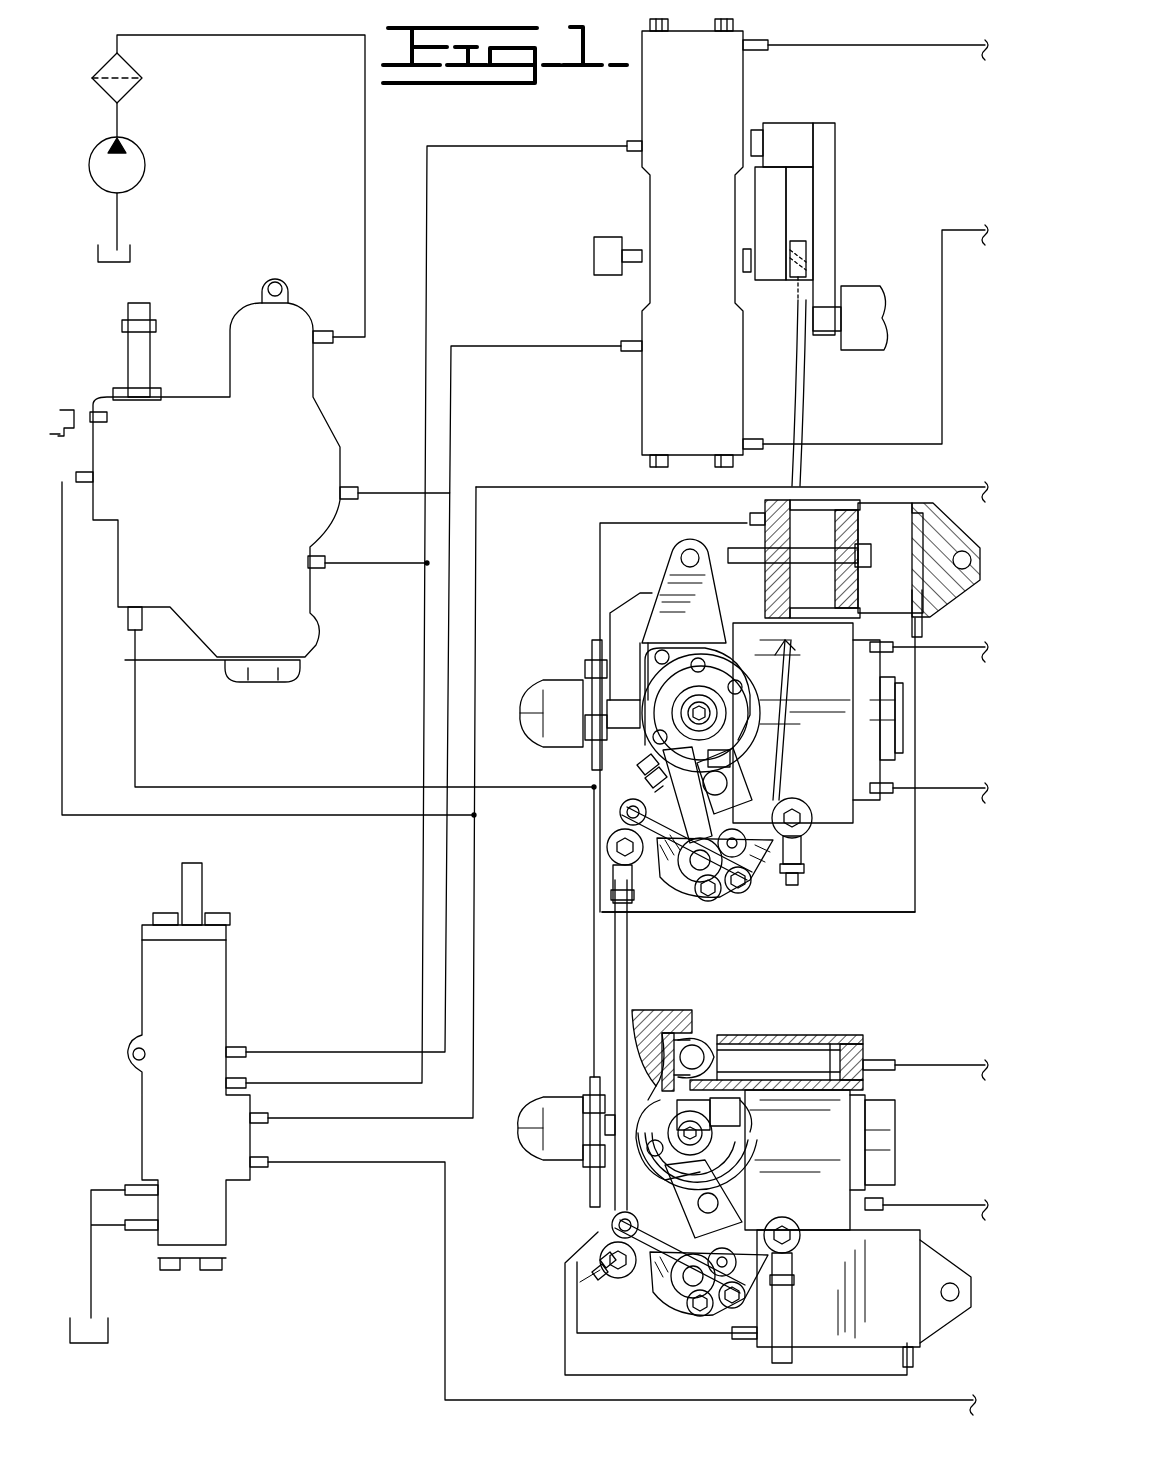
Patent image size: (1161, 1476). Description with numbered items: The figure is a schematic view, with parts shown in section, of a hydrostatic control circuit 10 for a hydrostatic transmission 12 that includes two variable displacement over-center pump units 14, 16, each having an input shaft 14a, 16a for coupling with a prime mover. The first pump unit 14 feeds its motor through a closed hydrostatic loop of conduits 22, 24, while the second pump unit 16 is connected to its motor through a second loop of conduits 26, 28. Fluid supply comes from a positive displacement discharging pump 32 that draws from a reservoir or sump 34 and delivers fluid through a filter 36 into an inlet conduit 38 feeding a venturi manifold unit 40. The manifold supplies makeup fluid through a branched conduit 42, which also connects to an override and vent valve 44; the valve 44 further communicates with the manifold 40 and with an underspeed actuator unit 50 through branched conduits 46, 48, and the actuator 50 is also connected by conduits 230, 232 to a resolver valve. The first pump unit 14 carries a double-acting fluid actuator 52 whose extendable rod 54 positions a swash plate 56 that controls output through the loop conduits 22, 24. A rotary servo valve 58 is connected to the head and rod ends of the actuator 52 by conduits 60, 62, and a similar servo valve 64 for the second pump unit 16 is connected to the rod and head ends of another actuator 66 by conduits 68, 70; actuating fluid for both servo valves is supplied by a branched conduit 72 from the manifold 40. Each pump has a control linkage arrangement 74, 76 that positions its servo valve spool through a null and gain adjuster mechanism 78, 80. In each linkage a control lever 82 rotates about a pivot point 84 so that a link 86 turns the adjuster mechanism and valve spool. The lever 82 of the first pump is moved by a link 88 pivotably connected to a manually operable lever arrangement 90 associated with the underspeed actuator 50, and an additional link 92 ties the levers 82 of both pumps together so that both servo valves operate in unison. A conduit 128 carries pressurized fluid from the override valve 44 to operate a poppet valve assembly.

The hydrostatic control circuit 10 is at (878, 40).
The hydrostatic transmission 12 is at (620, 545).
The first pump unit 14 is at (821, 694).
The input shaft 14a is at (536, 692).
The second pump unit 16 is at (831, 1208).
The input shaft 16a is at (552, 1102).
The conduit 22 is at (968, 790).
The conduit 24 is at (962, 650).
The conduit 26 is at (960, 1066).
The conduit 28 is at (946, 1207).
The positive displacement discharging pump 32 is at (140, 160).
The reservoir or sump 34 is at (138, 252).
The filter 36 is at (128, 62).
The inlet conduit 38 is at (125, 32).
The venturi manifold unit 40 is at (240, 477).
The branched conduit 42 is at (148, 822).
The override and vent valve 44 is at (204, 1133).
The branched conduit 46 is at (390, 563).
The branched conduit 48 is at (381, 493).
The underspeed actuator unit 50 is at (703, 172).
The double-acting fluid actuator 52 is at (824, 500).
The extendable rod 54 is at (906, 586).
The swash plate 56 is at (698, 638).
The rotary servo valve 58 is at (640, 745).
The conduit 60 is at (852, 913).
The conduit 62 is at (600, 556).
The servo valve 64 is at (642, 1092).
The actuator 66 is at (838, 1303).
The conduit 68 is at (678, 1335).
The conduit 70 is at (565, 1352).
The branched conduit 72 is at (352, 782).
The control linkage arrangement 74 is at (682, 896).
The control linkage arrangement 76 is at (655, 1308).
The null and gain adjuster mechanism 78 is at (752, 750).
The null and gain adjuster mechanism 80 is at (732, 1152).
The control lever 82 is at (616, 855).
The pivot point 84 is at (742, 840).
The link 86 is at (680, 787).
The link 88 is at (806, 410).
The manually operable lever arrangement 90 is at (843, 222).
The link 92 is at (628, 1002).
The conduit 128 is at (445, 1280).
The conduit 230 is at (850, 46).
The conduit 232 is at (942, 250).